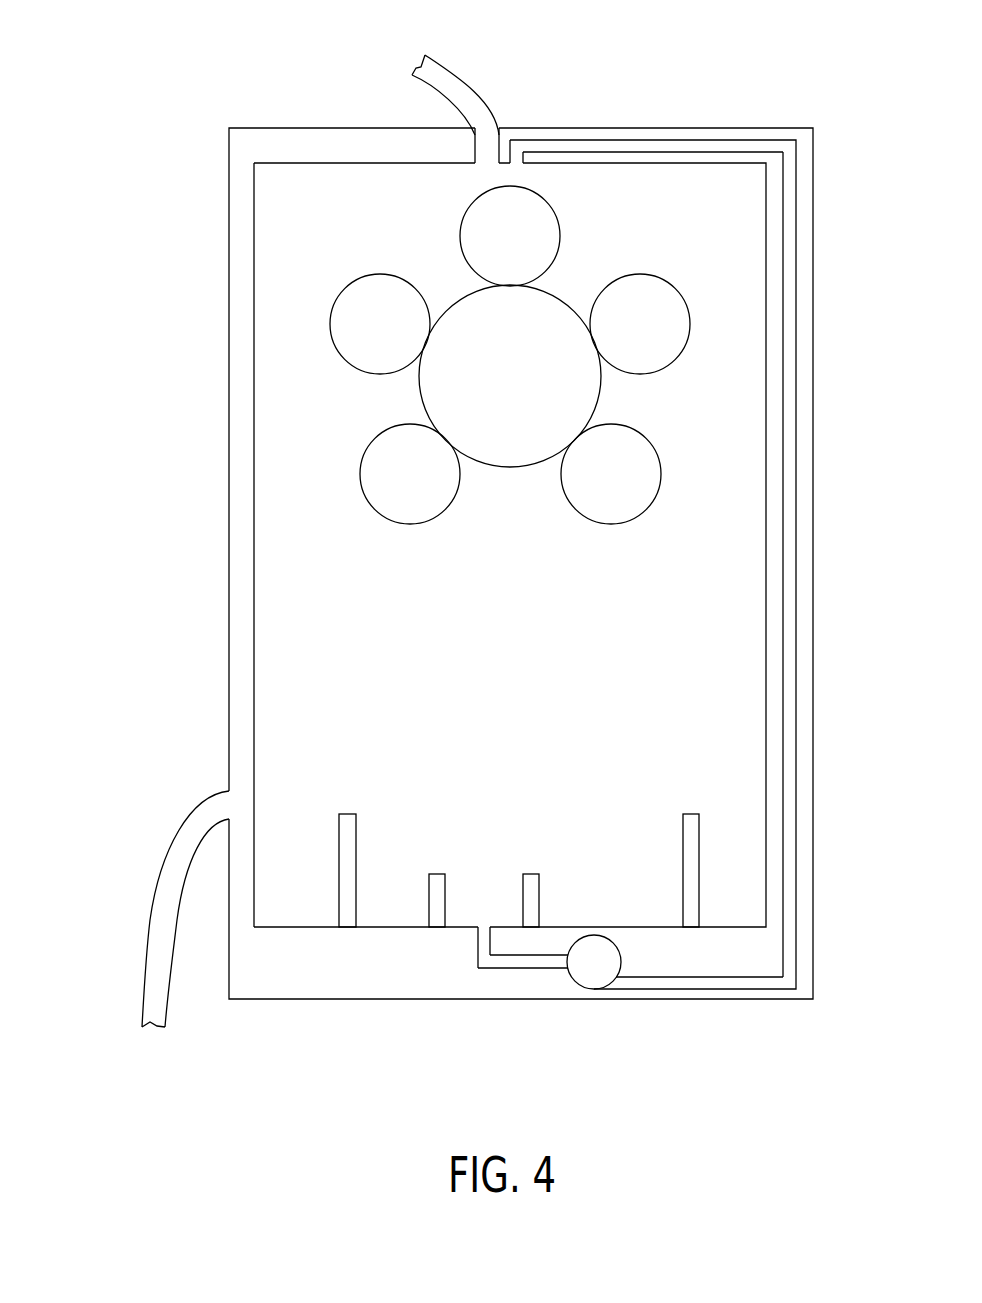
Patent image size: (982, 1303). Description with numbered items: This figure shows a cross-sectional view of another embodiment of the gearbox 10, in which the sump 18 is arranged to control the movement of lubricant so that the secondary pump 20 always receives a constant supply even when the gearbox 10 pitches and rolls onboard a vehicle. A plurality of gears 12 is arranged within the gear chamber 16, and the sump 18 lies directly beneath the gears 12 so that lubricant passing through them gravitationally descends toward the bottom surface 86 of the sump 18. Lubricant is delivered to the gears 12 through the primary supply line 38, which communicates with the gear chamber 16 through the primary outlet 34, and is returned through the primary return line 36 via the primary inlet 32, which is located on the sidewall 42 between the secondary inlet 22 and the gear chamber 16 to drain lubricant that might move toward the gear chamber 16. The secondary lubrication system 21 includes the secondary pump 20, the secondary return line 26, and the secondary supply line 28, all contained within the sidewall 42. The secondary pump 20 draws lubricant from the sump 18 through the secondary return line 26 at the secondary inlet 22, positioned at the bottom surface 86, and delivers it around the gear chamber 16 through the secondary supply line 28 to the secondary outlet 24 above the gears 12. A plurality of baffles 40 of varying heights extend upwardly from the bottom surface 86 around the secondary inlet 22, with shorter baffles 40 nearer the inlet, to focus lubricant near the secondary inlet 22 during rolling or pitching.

The gearbox 10 is at (112, 208).
The gears 12 is at (266, 128).
The gear chamber 16 is at (295, 436).
The sump 18 is at (583, 853).
The secondary pump 20 is at (593, 970).
The secondary lubrication system 21 is at (815, 331).
The secondary inlet 22 is at (476, 946).
The secondary outlet 24 is at (526, 147).
The secondary return line 26 is at (522, 962).
The secondary supply line 28 is at (788, 533).
The primary inlet 32 is at (240, 804).
The primary outlet 34 is at (488, 148).
The primary return line 36 is at (163, 905).
The primary supply line 38 is at (450, 85).
The baffle 40 is at (344, 814).
The sidewall 42 is at (240, 330).
The bottom surface 86 is at (307, 928).